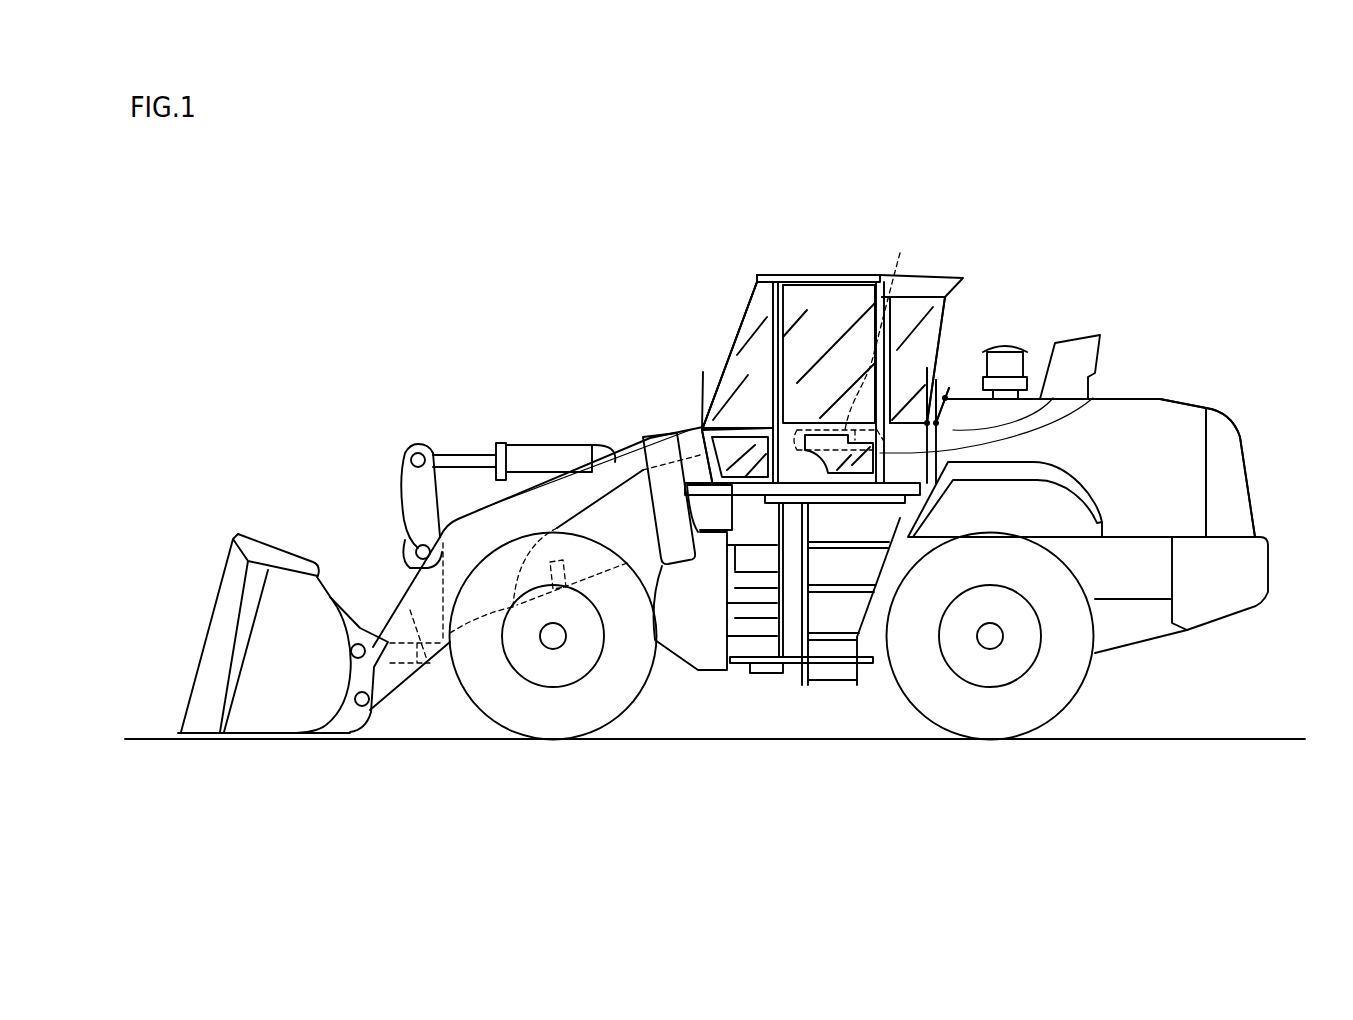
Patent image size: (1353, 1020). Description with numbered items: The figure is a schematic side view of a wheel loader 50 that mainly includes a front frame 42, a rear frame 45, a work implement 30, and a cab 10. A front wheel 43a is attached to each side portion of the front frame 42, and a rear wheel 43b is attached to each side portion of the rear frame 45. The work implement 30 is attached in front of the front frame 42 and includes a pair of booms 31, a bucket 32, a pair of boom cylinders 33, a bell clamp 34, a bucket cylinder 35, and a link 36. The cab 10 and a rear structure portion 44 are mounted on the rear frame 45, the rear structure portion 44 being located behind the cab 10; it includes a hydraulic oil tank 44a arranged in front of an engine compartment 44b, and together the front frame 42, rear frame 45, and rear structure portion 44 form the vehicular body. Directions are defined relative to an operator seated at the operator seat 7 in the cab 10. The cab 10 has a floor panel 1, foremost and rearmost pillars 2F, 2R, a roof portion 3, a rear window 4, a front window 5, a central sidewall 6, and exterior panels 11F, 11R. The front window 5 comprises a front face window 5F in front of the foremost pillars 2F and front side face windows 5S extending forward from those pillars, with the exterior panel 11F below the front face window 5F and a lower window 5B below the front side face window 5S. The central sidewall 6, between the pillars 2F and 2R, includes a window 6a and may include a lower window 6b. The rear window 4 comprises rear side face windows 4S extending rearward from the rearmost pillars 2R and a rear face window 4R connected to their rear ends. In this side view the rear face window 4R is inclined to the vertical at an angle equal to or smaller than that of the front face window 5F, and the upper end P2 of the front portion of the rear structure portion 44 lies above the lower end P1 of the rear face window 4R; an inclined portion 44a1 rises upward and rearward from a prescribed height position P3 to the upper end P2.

The wheel loader 50 is at (1076, 222).
The work implement 30 is at (372, 510).
The boom 31 is at (469, 540).
The bucket 32 is at (272, 675).
The boom cylinder 33 is at (632, 550).
The bell clamp 34 is at (411, 510).
The bucket cylinder 35 is at (550, 458).
The link 36 is at (400, 660).
The front frame 42 is at (692, 632).
The front wheel 43a is at (560, 705).
The rear wheel 43b is at (995, 710).
The rear structure portion 44 is at (1123, 413).
The hydraulic oil tank 44a is at (1053, 398).
The inclined portion 44a1 is at (1000, 396).
The engine compartment 44b is at (1173, 433).
The rear frame 45 is at (880, 632).
The floor panel 1 is at (703, 372).
The foremost pillar 2F is at (771, 312).
The rearmost pillar 2R is at (877, 297).
The roof portion 3 is at (783, 273).
The rear window 4 is at (917, 231).
The rear side face window 4S is at (925, 313).
The rear face window 4R is at (925, 347).
The front window 5 is at (687, 260).
The front face window 5F is at (738, 337).
The front side face window 5S is at (768, 312).
The lower window 5B is at (757, 453).
The central sidewall 6 is at (823, 303).
The window 6a is at (807, 312).
The lower window 6b is at (838, 455).
The operator seat 7 is at (888, 298).
The cab 10 is at (880, 254).
The exterior panel 11F is at (717, 477).
The exterior panel 11R is at (1088, 400).
The lower end of rear face window P1 is at (927, 423).
The upper end P2 is at (945, 398).
The prescribed height position P3 is at (936, 423).